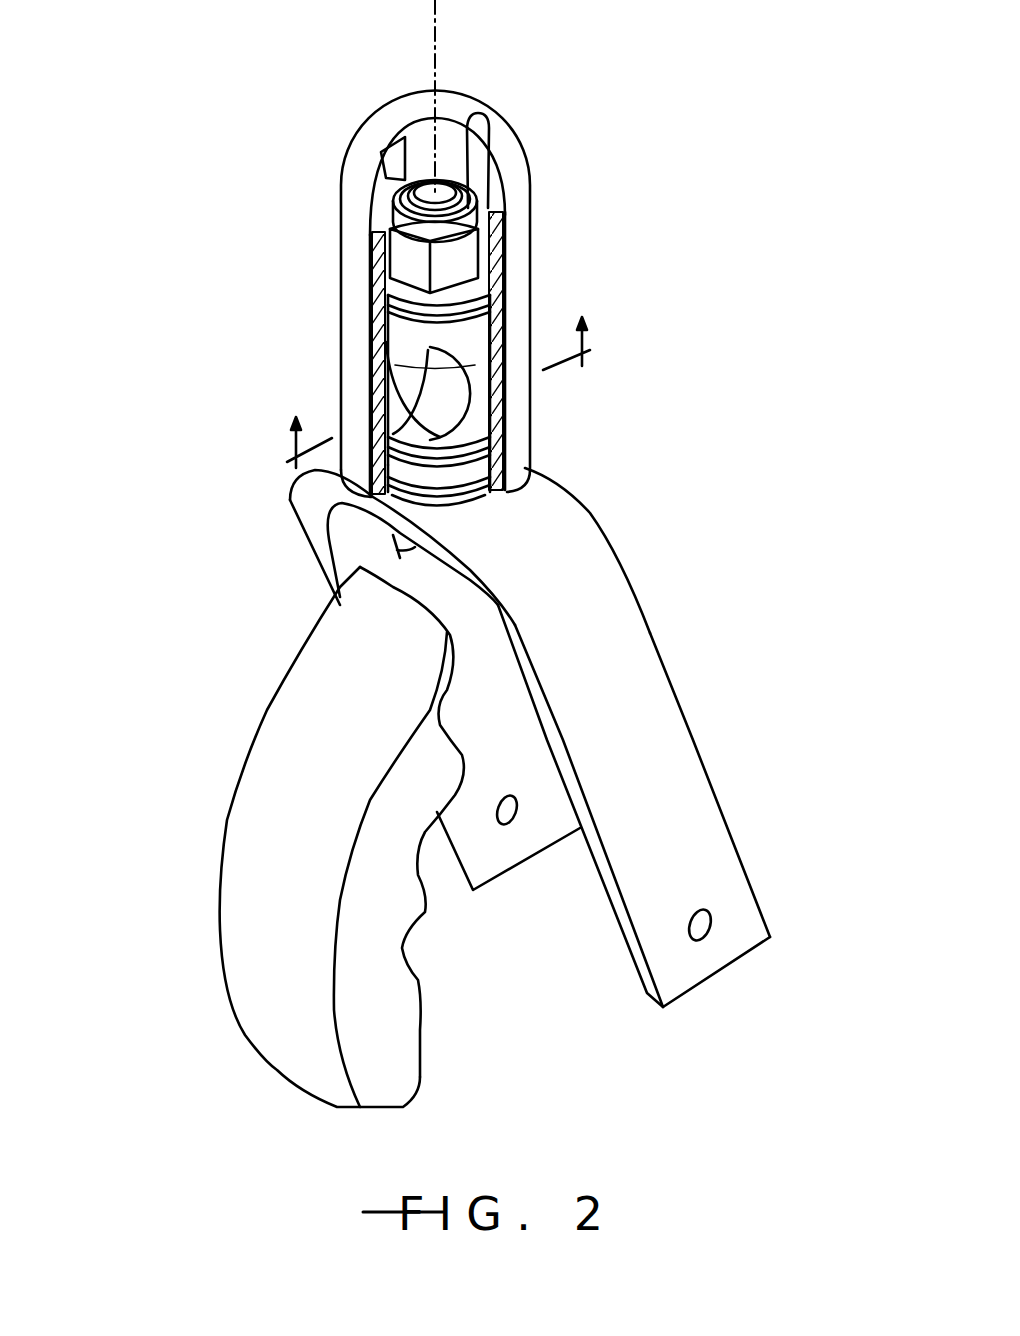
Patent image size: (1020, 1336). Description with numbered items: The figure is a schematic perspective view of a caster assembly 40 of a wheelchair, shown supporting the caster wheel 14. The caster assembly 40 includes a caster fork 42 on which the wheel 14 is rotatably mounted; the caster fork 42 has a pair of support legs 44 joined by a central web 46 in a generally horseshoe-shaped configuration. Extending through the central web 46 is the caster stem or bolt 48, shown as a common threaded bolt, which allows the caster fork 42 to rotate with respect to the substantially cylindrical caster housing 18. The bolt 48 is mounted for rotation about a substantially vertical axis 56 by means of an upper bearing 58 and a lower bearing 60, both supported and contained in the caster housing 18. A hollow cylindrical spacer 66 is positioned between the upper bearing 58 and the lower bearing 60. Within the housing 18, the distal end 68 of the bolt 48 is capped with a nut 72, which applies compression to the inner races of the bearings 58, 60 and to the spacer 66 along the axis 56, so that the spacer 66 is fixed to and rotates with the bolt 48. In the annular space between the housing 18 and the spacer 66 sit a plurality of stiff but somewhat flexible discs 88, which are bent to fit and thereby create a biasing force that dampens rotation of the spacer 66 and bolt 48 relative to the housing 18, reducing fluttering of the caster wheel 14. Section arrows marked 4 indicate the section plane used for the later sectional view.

The caster wheel 14 is at (230, 800).
The caster housing 18 is at (533, 206).
The caster assembly 40 is at (688, 298).
The caster fork 42 is at (694, 717).
The support legs 44 is at (328, 560).
The central web 46 is at (592, 510).
The caster stem or bolt 48 is at (400, 535).
The vertical axis 56 is at (435, 60).
The upper bearing 58 is at (503, 320).
The lower bearing 60 is at (503, 462).
The spacer 66 is at (417, 358).
The distal end 68 is at (418, 178).
The nut 72 is at (395, 262).
The discs 88 is at (395, 380).
The section line 4- 4 is at (436, 397).